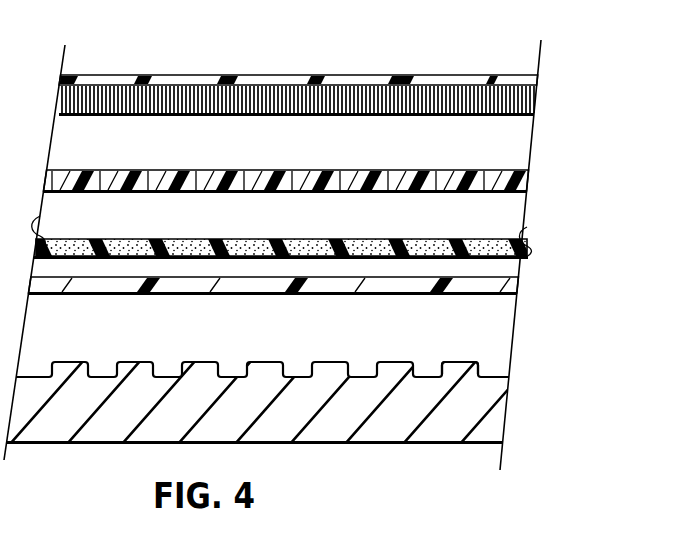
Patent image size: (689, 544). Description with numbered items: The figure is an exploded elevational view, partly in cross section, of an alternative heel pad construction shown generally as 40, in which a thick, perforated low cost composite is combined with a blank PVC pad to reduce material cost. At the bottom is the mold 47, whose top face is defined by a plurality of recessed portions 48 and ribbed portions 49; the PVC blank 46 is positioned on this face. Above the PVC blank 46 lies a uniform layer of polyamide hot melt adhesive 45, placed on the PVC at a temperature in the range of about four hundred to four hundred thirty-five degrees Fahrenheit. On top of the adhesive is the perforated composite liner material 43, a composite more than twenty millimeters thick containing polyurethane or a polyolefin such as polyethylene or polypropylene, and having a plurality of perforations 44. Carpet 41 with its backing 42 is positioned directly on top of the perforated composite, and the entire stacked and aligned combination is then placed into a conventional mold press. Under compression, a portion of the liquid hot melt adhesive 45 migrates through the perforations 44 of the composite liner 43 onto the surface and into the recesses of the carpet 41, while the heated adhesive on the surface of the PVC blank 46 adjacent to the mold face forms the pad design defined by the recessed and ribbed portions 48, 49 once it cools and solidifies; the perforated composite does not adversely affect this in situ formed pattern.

The alternative embodiment of the heel pad construction 40 is at (630, 12).
The carpet 41 is at (534, 99).
The backing 42 is at (467, 82).
The perforated composite liner material 43 is at (308, 166).
The perforations 44 is at (281, 172).
The polyamide hot melt adhesive 45 is at (523, 254).
The PVC blank 46 is at (512, 290).
The mold 47 is at (497, 423).
The recessed portions 48 is at (497, 378).
The ribbed portions 49 is at (460, 370).